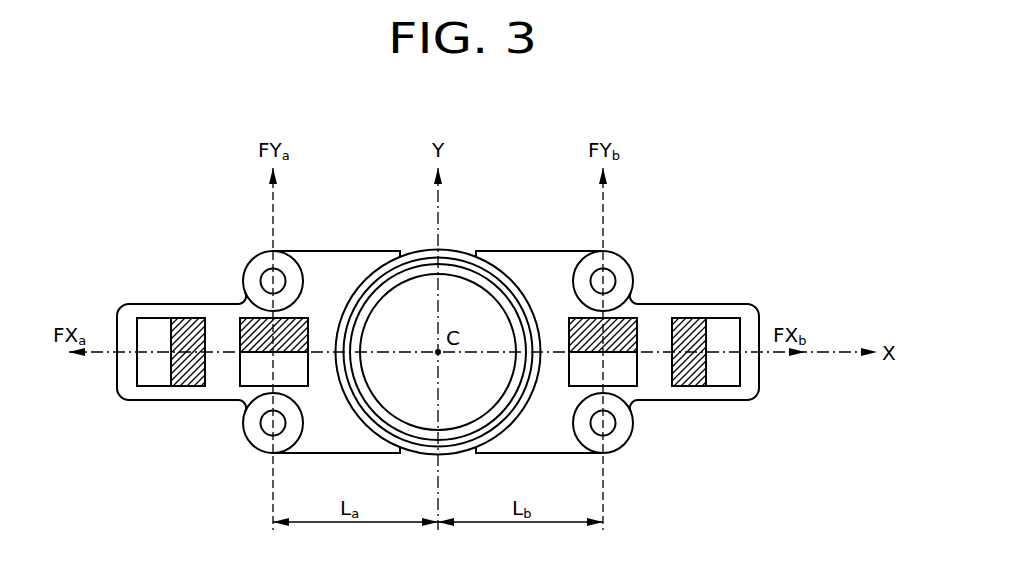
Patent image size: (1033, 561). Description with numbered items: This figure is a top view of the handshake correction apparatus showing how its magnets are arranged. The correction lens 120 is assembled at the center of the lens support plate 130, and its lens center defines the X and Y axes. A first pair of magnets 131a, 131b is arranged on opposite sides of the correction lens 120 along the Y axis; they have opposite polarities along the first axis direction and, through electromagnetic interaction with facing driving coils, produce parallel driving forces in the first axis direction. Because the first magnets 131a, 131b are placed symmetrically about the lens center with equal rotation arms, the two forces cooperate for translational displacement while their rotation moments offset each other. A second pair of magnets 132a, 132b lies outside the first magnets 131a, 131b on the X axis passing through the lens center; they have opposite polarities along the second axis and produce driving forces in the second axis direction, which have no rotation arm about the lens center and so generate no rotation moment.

The correction lens 120 is at (458, 300).
The lens support plate 130 is at (547, 270).
The first magnet 131a is at (252, 375).
The first magnet 131b is at (623, 375).
The second magnet 132a is at (153, 375).
The second magnet 132b is at (722, 375).